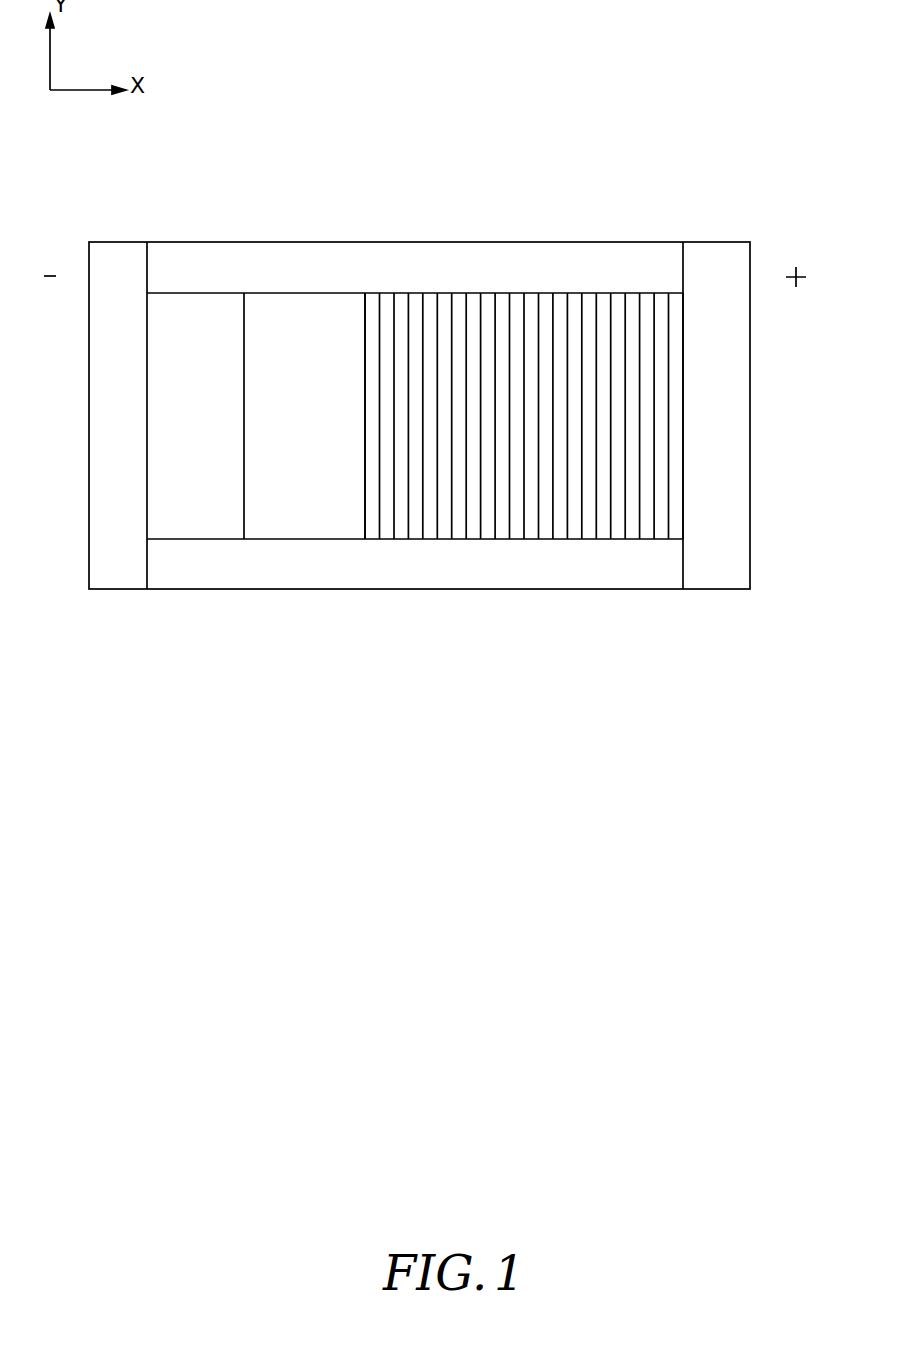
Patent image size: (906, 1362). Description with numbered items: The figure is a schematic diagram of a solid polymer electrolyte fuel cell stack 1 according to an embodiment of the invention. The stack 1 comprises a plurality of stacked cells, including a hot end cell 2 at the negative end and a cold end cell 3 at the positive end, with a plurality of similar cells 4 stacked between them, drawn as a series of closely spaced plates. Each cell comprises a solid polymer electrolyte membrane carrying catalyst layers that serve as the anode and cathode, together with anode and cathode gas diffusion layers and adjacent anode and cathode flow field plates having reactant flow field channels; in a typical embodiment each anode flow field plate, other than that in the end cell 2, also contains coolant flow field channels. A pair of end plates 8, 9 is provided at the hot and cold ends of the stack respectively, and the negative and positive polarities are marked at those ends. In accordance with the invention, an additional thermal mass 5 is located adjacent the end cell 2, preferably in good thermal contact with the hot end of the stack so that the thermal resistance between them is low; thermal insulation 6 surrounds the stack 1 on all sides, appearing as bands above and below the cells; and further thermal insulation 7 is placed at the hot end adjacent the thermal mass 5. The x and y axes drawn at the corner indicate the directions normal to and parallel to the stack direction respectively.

The stack 1 is at (683, 144).
The hot end cell 2 is at (372, 300).
The cold end cell 3 is at (678, 528).
The cells 4 is at (532, 303).
The thermal mass 5 is at (308, 495).
The thermal insulation 6 is at (575, 262).
The thermal insulation 7 is at (200, 502).
The end plate 8 is at (110, 462).
The end plate 9 is at (720, 458).